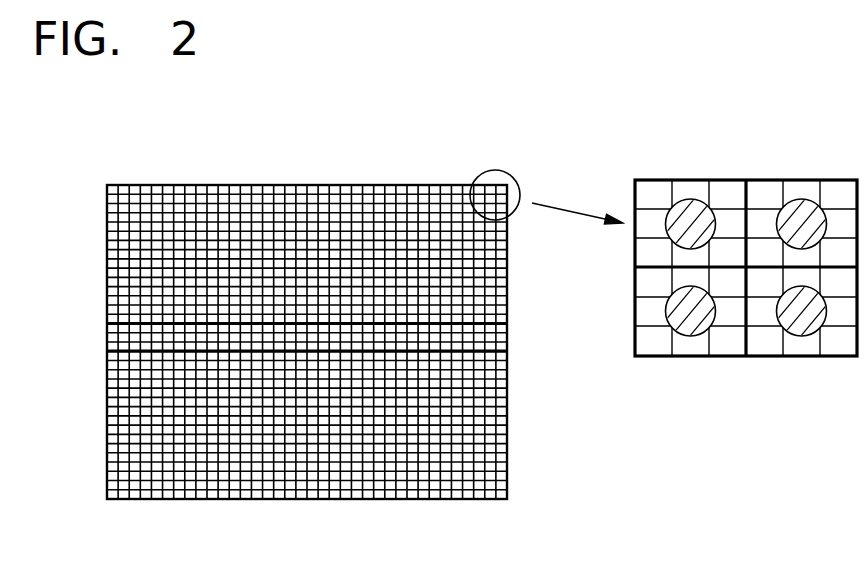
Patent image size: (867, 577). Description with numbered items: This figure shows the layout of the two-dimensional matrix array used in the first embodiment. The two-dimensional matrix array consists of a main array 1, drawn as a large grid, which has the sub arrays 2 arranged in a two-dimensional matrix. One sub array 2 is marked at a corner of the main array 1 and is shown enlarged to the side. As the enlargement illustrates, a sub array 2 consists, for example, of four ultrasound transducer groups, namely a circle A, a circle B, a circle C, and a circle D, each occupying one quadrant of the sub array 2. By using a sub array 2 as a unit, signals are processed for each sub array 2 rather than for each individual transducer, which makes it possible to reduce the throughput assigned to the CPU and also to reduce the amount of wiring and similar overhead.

The main array 1 is at (280, 195).
The sub array 2 is at (503, 183).
The circle A is at (692, 207).
The circle B is at (803, 207).
The circle C is at (689, 332).
The circle D is at (800, 332).